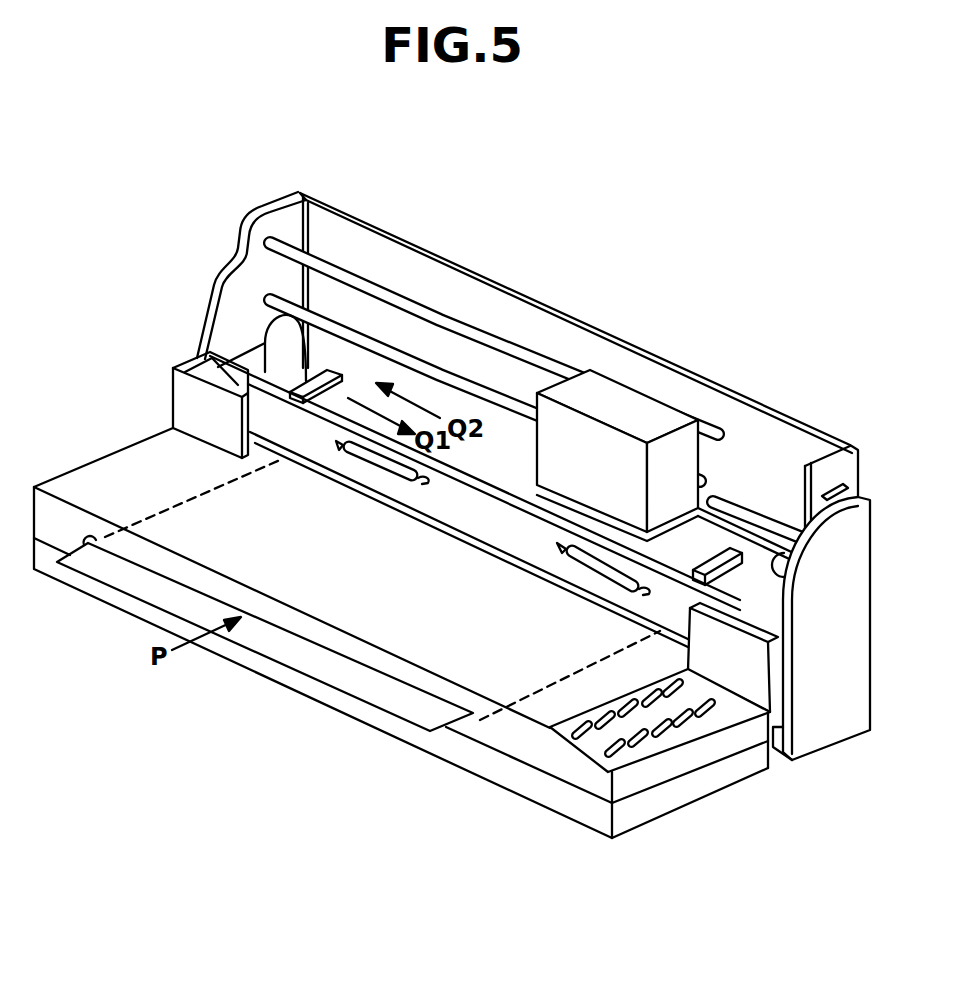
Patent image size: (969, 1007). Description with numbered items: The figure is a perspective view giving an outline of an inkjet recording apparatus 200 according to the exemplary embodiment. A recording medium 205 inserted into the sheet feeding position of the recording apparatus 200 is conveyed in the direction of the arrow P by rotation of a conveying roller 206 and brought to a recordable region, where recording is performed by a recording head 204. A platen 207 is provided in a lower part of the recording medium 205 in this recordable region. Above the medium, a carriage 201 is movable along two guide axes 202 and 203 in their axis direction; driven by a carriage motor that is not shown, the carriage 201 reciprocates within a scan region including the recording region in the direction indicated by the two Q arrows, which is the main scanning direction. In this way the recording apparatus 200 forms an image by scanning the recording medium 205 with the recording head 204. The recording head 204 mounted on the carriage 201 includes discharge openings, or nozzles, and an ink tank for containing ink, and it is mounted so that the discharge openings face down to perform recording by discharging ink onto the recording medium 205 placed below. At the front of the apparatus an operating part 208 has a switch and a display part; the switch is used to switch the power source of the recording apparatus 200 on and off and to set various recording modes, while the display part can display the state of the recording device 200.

The inkjet recording apparatus 200 is at (427, 752).
The carriage 201 is at (717, 472).
The guide axis 202 is at (360, 280).
The guide axis 203 is at (398, 355).
The recording head 204 is at (640, 410).
The recording medium 205 is at (353, 682).
The conveying roller 206 is at (762, 555).
The platen 207 is at (228, 372).
The operating part 208 is at (700, 733).